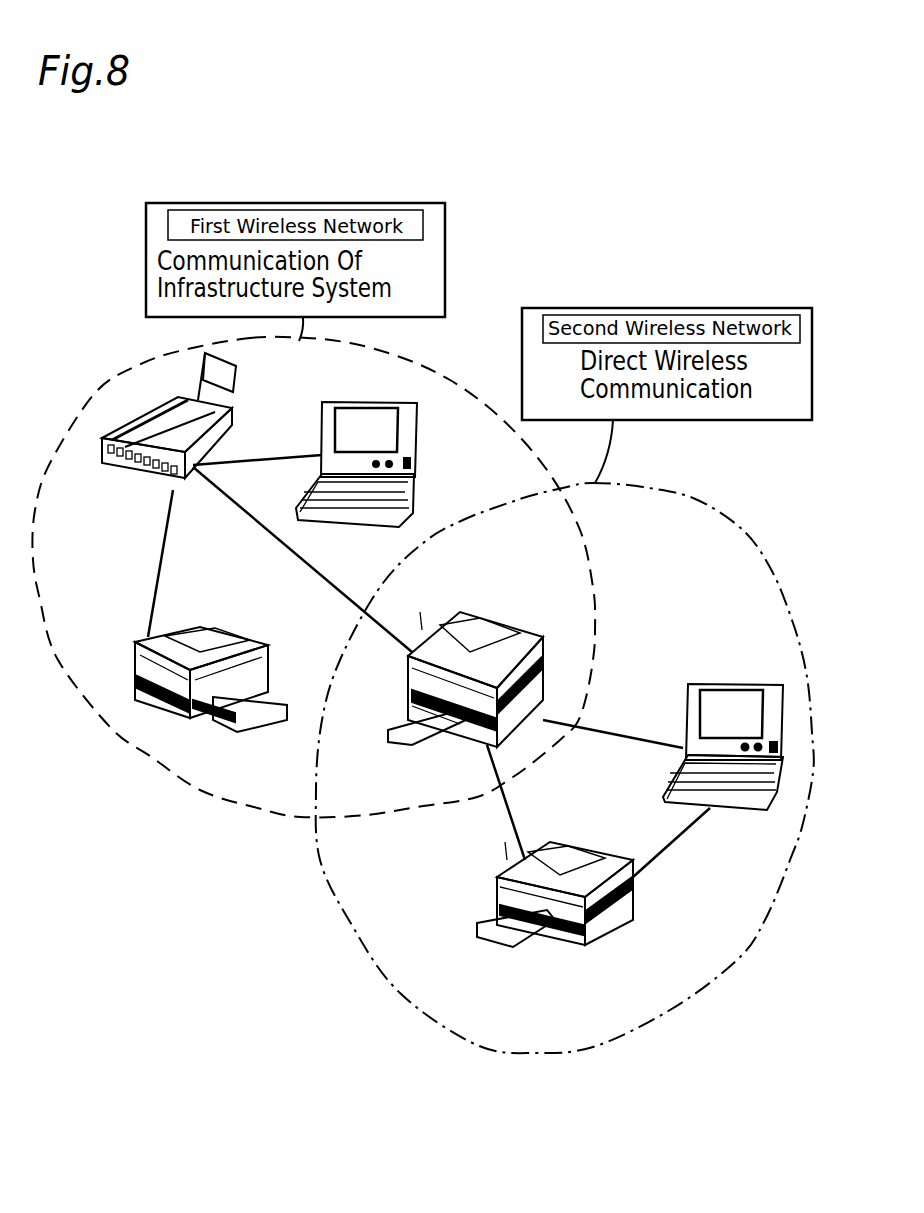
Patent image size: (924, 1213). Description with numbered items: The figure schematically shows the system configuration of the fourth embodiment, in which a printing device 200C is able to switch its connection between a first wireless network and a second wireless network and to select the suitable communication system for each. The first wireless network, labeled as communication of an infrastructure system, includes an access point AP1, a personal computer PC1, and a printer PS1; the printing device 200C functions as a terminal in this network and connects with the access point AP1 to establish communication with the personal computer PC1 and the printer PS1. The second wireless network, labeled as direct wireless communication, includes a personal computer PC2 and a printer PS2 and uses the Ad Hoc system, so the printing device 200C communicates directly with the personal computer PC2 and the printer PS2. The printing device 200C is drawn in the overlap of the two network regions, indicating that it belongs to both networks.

The access point AP1 is at (140, 473).
The personal computer PC1 is at (360, 400).
The printer PS1 is at (207, 625).
The printing device 200C is at (490, 618).
The personal computer PC2 is at (710, 683).
The printer PS2 is at (577, 847).